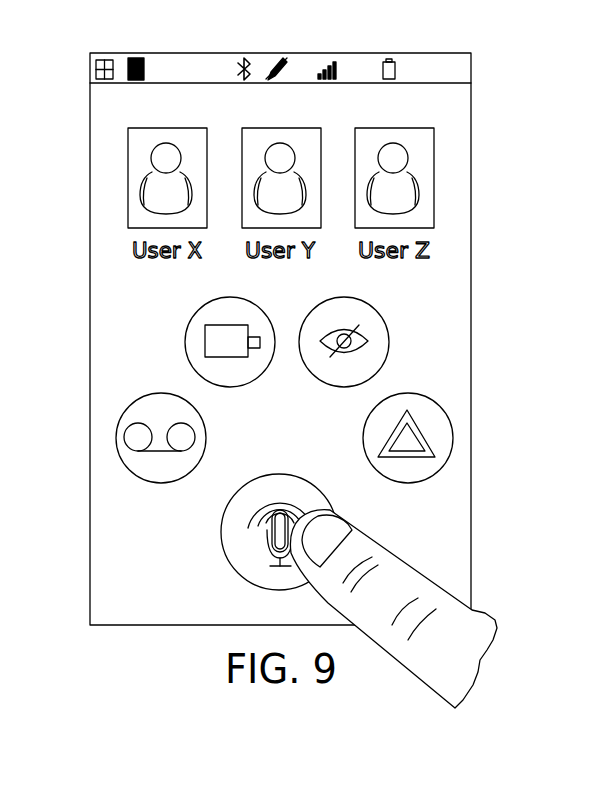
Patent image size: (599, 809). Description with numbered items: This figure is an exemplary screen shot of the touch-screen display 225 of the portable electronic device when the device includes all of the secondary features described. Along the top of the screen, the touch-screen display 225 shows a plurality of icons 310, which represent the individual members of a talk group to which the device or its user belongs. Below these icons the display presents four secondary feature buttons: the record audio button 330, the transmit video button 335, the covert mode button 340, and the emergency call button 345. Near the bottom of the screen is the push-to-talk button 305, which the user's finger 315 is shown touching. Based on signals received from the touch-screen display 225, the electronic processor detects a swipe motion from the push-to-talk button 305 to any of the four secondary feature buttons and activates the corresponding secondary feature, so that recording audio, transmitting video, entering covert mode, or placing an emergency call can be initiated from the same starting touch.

The touch-screen display 225 is at (283, 52).
The plurality of icons 310 is at (112, 138).
The transmit video button 335 is at (192, 318).
The covert mode button 340 is at (380, 318).
The record audio button 330 is at (160, 394).
The emergency call button 345 is at (406, 394).
The push-to-talk button 305 is at (280, 472).
The user's finger 315 is at (398, 556).